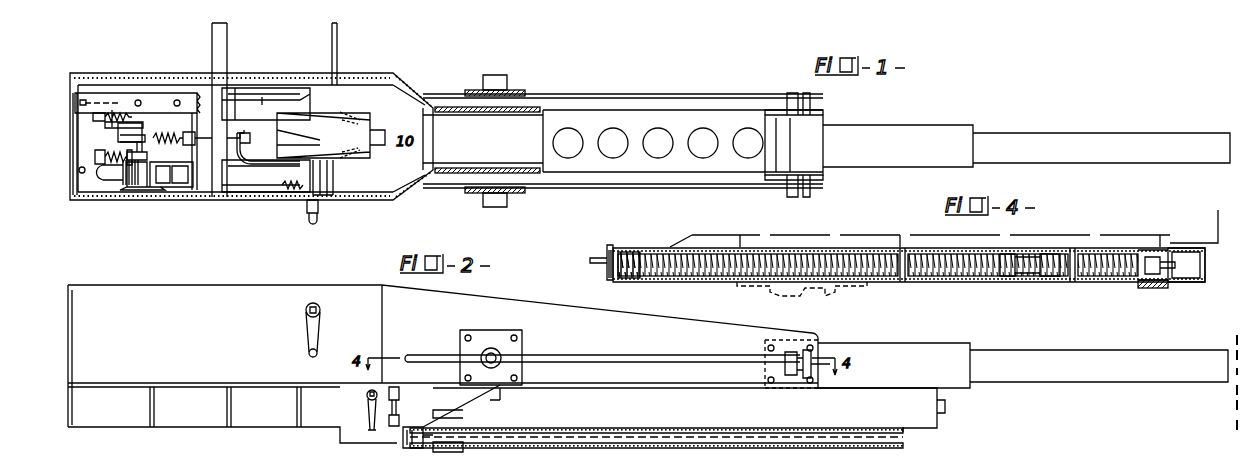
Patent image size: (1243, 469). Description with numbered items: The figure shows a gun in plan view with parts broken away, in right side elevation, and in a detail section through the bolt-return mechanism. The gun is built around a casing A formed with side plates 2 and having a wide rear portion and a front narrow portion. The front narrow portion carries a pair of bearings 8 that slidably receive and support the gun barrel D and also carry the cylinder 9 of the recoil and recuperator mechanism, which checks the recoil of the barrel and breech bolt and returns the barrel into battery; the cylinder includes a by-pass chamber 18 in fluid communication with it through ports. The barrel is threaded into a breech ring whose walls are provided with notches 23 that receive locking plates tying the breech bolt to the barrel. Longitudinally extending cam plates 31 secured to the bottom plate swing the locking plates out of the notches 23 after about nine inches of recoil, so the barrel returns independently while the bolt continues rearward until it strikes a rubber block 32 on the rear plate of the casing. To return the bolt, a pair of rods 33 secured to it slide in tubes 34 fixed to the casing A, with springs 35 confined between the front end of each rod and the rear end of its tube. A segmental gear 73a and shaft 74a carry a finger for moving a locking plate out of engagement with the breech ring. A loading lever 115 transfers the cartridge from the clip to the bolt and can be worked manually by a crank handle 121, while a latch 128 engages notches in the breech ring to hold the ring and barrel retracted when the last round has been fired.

In FIG. 1, the side plates 2 is at (158, 73).
In FIG. 1, the bearings 8 is at (808, 143).
In FIG. 4, the bearings 8 is at (770, 282).
In FIG. 2, the bearings 8 is at (797, 364).
In FIG. 2, the cylinder 9 is at (689, 410).
In FIG. 2, the by-pass chamber 18 is at (625, 444).
In FIG. 1, the notches 23 is at (340, 120).
In FIG. 1, the cam plates 31 is at (243, 97).
In FIG. 1, the rubber block 32 is at (80, 160).
In FIG. 4, the rods 33 is at (630, 277).
In FIG. 1, the tubes 34 is at (607, 105).
In FIG. 4, the tubes 34 is at (993, 283).
In FIG. 2, the tubes 34 is at (618, 362).
In FIG. 4, the springs 35 is at (683, 265).
In FIG. 2, the segmental gear 73a is at (397, 426).
In FIG. 2, the shaft 74a is at (402, 393).
In FIG. 1, the loading lever 115 is at (242, 154).
In FIG. 1, the crank handle 121 is at (315, 222).
In FIG. 2, the crank handle 121 is at (318, 333).
In FIG. 1, the latch 128 is at (180, 173).
In FIG. 1, the casing A is at (678, 122).
In FIG. 4, the casing A is at (1072, 235).
In FIG. 1, the gun barrel D is at (1026, 146).
In FIG. 2, the gun barrel D is at (1023, 365).